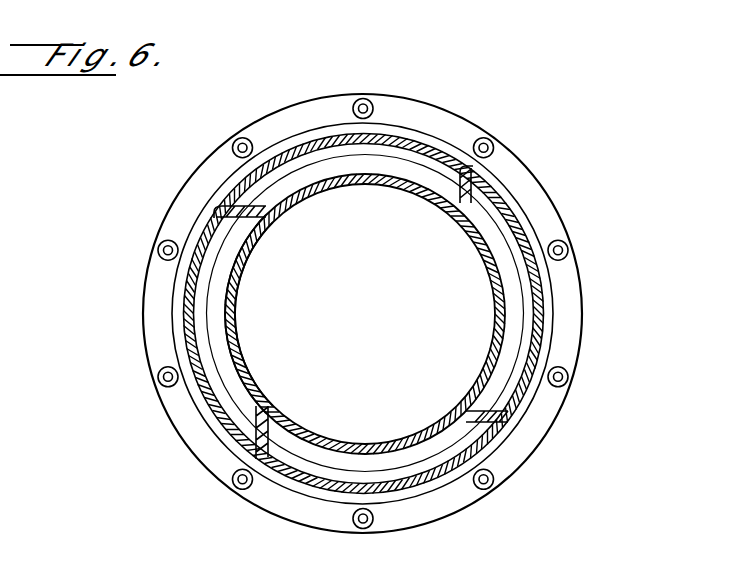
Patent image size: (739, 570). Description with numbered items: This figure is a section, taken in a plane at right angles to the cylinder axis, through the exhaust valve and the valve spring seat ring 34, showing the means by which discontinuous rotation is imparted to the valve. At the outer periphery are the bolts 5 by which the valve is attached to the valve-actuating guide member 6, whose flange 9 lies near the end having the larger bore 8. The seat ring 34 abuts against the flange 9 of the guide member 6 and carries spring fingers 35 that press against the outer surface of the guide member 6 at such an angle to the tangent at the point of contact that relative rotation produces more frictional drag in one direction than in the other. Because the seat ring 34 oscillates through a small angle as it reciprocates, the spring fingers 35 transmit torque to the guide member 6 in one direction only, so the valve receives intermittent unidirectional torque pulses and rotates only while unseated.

The bolts 5 is at (162, 242).
The valve-actuating guide member 6 is at (491, 248).
The larger bore 8 is at (249, 251).
The flange 9 is at (227, 152).
The seat ring 34 is at (547, 303).
The spring fingers 35 is at (268, 204).